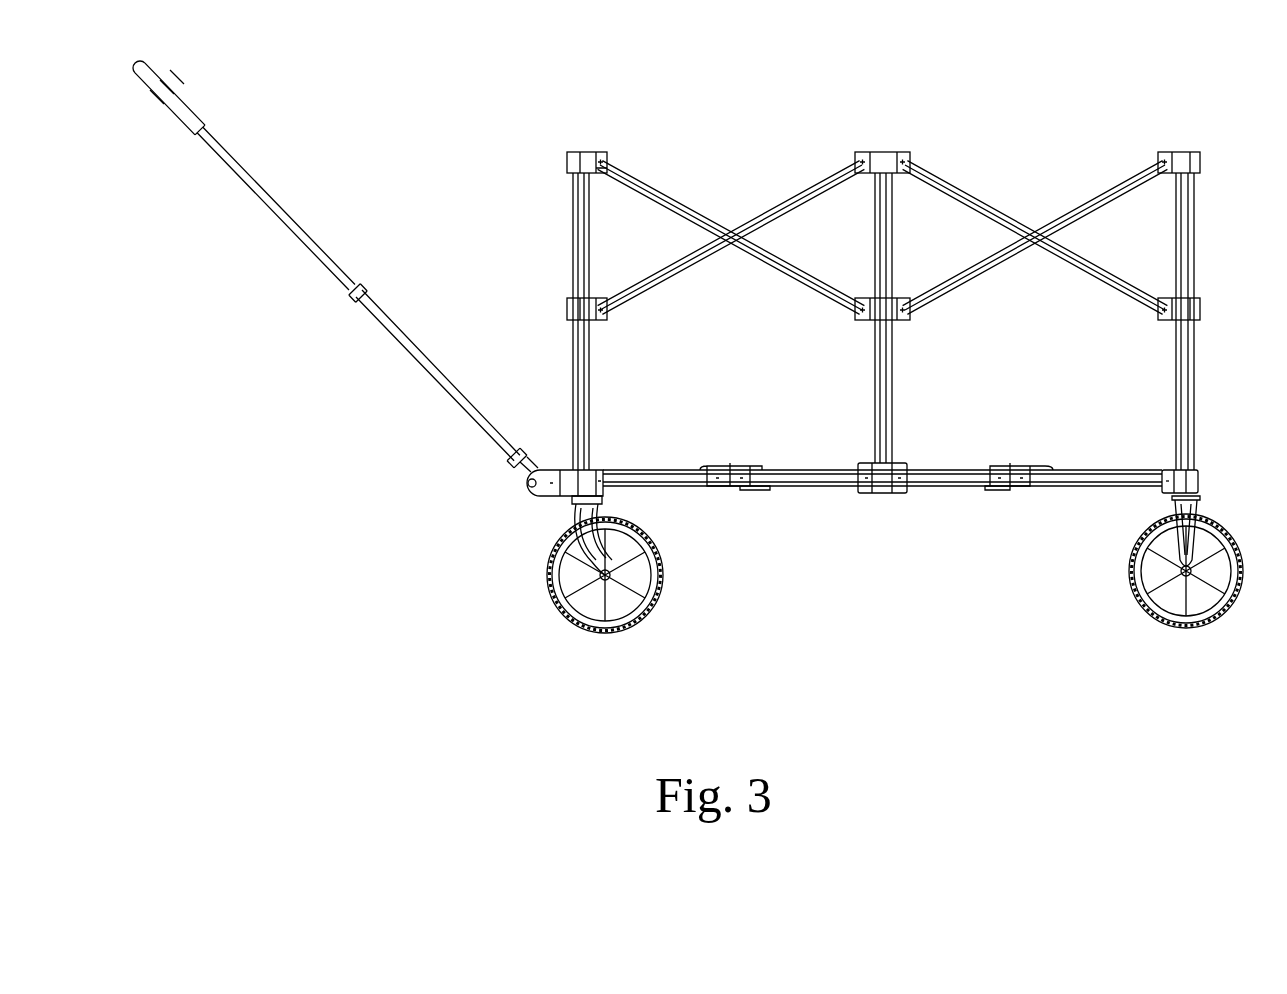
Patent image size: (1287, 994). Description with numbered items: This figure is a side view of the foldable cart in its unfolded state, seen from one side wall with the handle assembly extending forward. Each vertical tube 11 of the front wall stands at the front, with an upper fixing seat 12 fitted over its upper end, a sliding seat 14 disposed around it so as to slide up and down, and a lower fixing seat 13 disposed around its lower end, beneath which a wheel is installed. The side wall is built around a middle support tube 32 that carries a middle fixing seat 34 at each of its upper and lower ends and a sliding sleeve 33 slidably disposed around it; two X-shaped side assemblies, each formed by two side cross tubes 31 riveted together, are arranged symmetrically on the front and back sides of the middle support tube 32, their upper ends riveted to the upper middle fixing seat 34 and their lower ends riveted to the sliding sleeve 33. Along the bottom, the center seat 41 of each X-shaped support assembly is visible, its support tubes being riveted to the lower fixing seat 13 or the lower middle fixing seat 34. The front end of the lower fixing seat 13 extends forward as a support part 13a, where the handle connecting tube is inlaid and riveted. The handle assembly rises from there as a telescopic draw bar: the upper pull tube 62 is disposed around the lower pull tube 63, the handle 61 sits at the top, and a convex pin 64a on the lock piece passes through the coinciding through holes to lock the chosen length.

The vertical tube 11 is at (573, 232).
The upper fixing seat 12 is at (567, 152).
The lower fixing seat 13 is at (572, 472).
The support part 13a is at (547, 482).
The sliding seat 14 is at (570, 300).
The side cross tube 31 is at (676, 197).
The middle support tube 32 is at (873, 231).
The sliding sleeve 33 is at (898, 296).
The middle fixing seat 34 is at (862, 155).
The center seat 41 is at (733, 488).
The handle 61 is at (187, 128).
The upper pull tube 62 is at (278, 229).
The lower pull tube 63 is at (421, 373).
The convex pin 64a is at (353, 298).